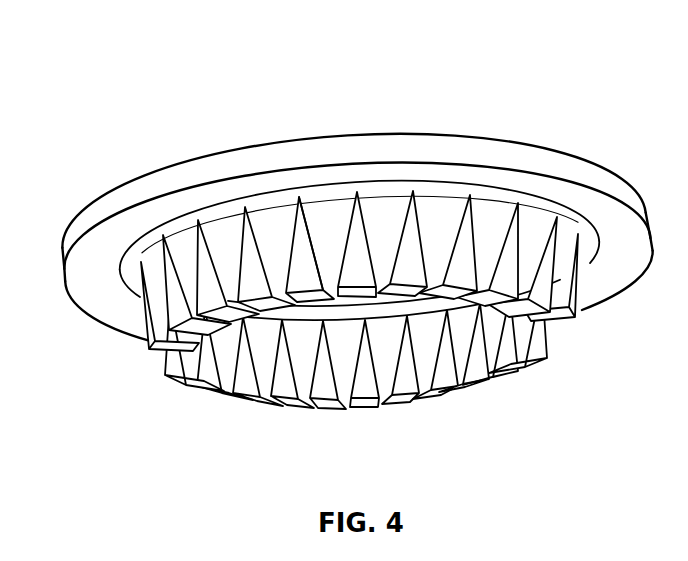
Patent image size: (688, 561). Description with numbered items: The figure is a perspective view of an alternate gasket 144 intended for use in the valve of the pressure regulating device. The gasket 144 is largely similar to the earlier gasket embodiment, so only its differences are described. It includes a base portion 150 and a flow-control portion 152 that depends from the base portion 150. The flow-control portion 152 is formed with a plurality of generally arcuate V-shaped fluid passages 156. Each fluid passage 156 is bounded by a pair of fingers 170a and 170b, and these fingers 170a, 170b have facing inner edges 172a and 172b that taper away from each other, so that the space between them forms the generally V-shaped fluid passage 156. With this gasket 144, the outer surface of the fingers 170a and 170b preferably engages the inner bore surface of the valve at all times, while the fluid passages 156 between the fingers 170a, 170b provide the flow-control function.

The gasket 144 is at (332, 284).
The base portion 150 is at (517, 150).
The flow-control portion 152 is at (144, 348).
The fluid passage 156 is at (318, 409).
The finger 170a is at (270, 238).
The finger 170b is at (337, 224).
The inner edge 172a is at (314, 233).
The inner edge 172b is at (313, 233).